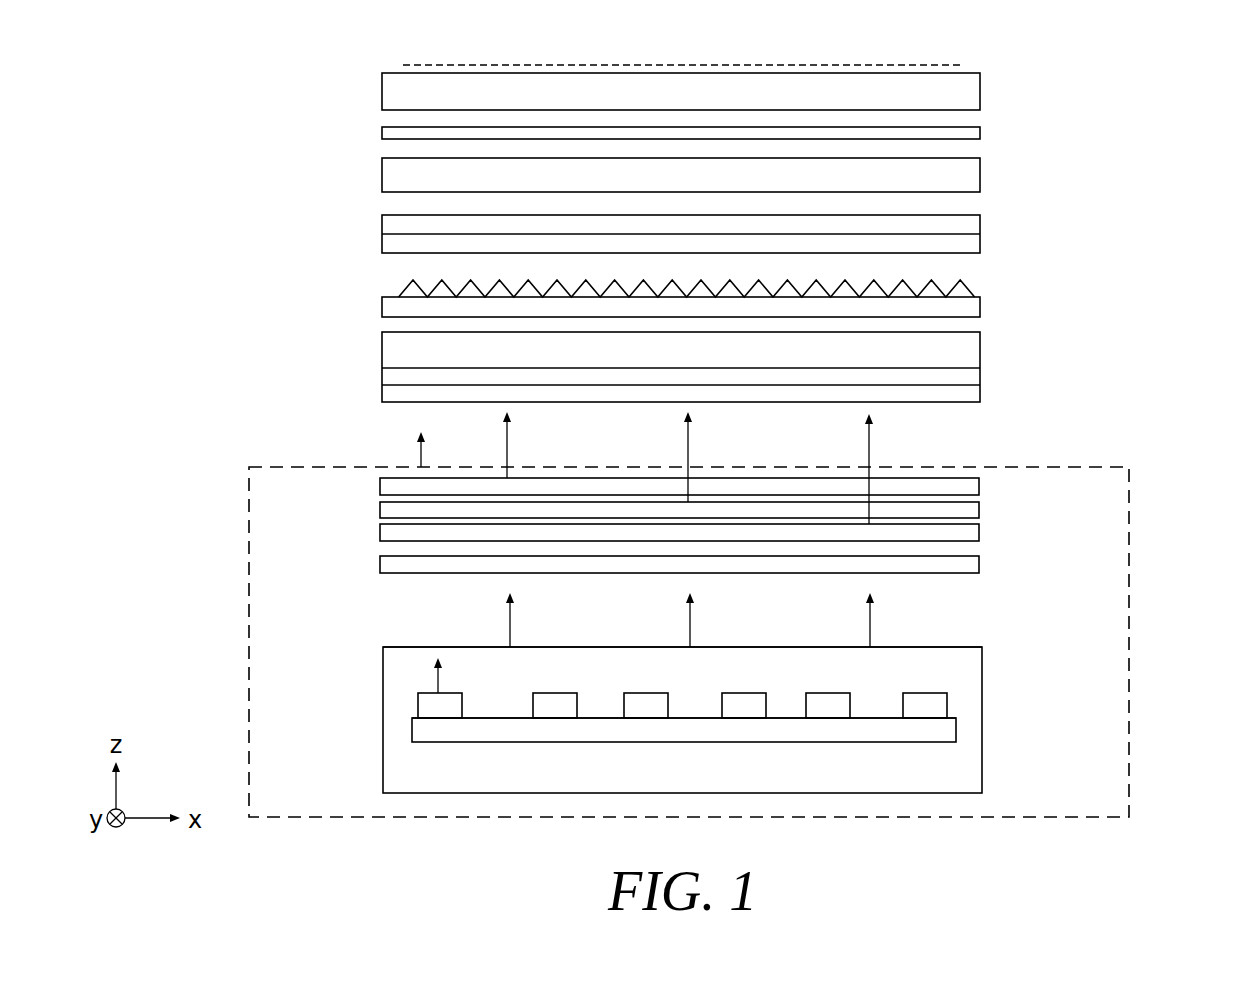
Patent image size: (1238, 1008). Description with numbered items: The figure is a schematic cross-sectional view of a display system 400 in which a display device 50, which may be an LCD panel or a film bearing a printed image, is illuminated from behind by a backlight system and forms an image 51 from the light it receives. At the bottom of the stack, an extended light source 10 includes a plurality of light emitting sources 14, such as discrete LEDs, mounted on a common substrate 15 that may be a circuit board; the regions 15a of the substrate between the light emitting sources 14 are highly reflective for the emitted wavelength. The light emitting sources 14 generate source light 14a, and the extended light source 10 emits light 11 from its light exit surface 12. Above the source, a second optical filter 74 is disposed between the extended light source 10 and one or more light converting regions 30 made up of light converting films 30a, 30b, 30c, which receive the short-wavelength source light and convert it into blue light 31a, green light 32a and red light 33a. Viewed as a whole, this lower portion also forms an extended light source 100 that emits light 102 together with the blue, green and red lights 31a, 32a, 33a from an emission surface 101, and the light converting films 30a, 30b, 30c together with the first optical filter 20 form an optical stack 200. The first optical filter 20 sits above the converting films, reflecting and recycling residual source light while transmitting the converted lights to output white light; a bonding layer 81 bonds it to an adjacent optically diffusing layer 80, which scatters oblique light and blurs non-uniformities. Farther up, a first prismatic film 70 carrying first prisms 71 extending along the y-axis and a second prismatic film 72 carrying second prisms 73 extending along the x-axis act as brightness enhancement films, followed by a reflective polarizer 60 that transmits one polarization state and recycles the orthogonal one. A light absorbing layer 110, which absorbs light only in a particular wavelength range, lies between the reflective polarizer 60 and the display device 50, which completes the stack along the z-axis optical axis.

The display system 400 is at (188, 108).
The image 51 is at (928, 65).
The display device 50 is at (965, 90).
The light absorbing layer 110 is at (382, 132).
The reflective polarizer 60 is at (970, 172).
The second prismatic film 72 is at (682, 230).
The second prisms 73 is at (382, 228).
The first prismatic film 70 is at (689, 294).
The first prisms 71 is at (408, 290).
The first optical filter 20 is at (678, 373).
The bonding layer 81 is at (388, 378).
The optically diffusing layer 80 is at (390, 395).
The optical stack 200 is at (215, 310).
The extended light source 100 is at (736, 614).
The emission surface 101 is at (1105, 465).
The emitted light 102 is at (416, 454).
The light converting regions 30 is at (679, 516).
The light converting film 30a is at (380, 487).
The light converting film 30b is at (380, 508).
The light converting film 30c is at (380, 530).
The blue light 31a is at (509, 442).
The green light 32a is at (686, 450).
The red light 33a is at (866, 450).
The second optical filter 74 is at (380, 565).
The emitted light 11 is at (507, 620).
The extended light source 10 is at (693, 696).
The light exit surface 12 is at (963, 645).
The common substrate 15 is at (684, 722).
The regions between light emitting sources 15a is at (700, 717).
The light emitting sources 14 is at (425, 705).
The source light 14a is at (440, 680).